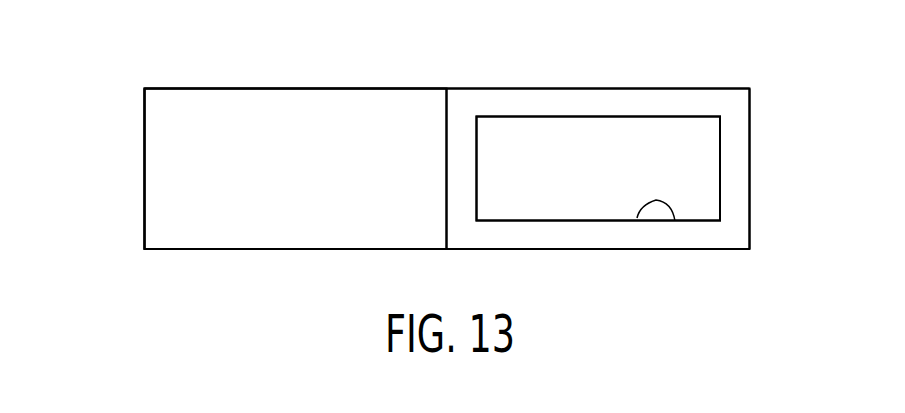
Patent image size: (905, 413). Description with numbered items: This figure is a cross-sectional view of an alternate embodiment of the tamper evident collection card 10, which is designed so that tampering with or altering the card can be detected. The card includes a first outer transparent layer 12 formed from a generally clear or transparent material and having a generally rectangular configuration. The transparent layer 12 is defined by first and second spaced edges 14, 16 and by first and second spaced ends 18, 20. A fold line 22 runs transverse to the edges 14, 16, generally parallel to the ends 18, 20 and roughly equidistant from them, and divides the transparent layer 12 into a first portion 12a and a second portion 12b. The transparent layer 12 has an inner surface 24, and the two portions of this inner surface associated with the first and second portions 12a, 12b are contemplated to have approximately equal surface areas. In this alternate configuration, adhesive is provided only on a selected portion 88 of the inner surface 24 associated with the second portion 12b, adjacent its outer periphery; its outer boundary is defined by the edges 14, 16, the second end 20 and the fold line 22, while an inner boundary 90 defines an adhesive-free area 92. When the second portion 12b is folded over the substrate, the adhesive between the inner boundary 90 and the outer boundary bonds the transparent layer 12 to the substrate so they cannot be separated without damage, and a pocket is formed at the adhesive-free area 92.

The collection card 10 is at (122, 252).
The first outer transparent layer 12 is at (128, 110).
The first portion of transparent layer 12a is at (322, 182).
The second portion of transparent layer 12b is at (629, 178).
The first edge 14 is at (277, 88).
The second edge 16 is at (385, 249).
The first end 18 is at (144, 167).
The second end 20 is at (750, 167).
The fold line 22 is at (446, 167).
The inner surface 24 is at (198, 110).
The selected portion 88 is at (590, 235).
The inner boundary 90 is at (675, 221).
The adhesive-free area 92 is at (538, 157).